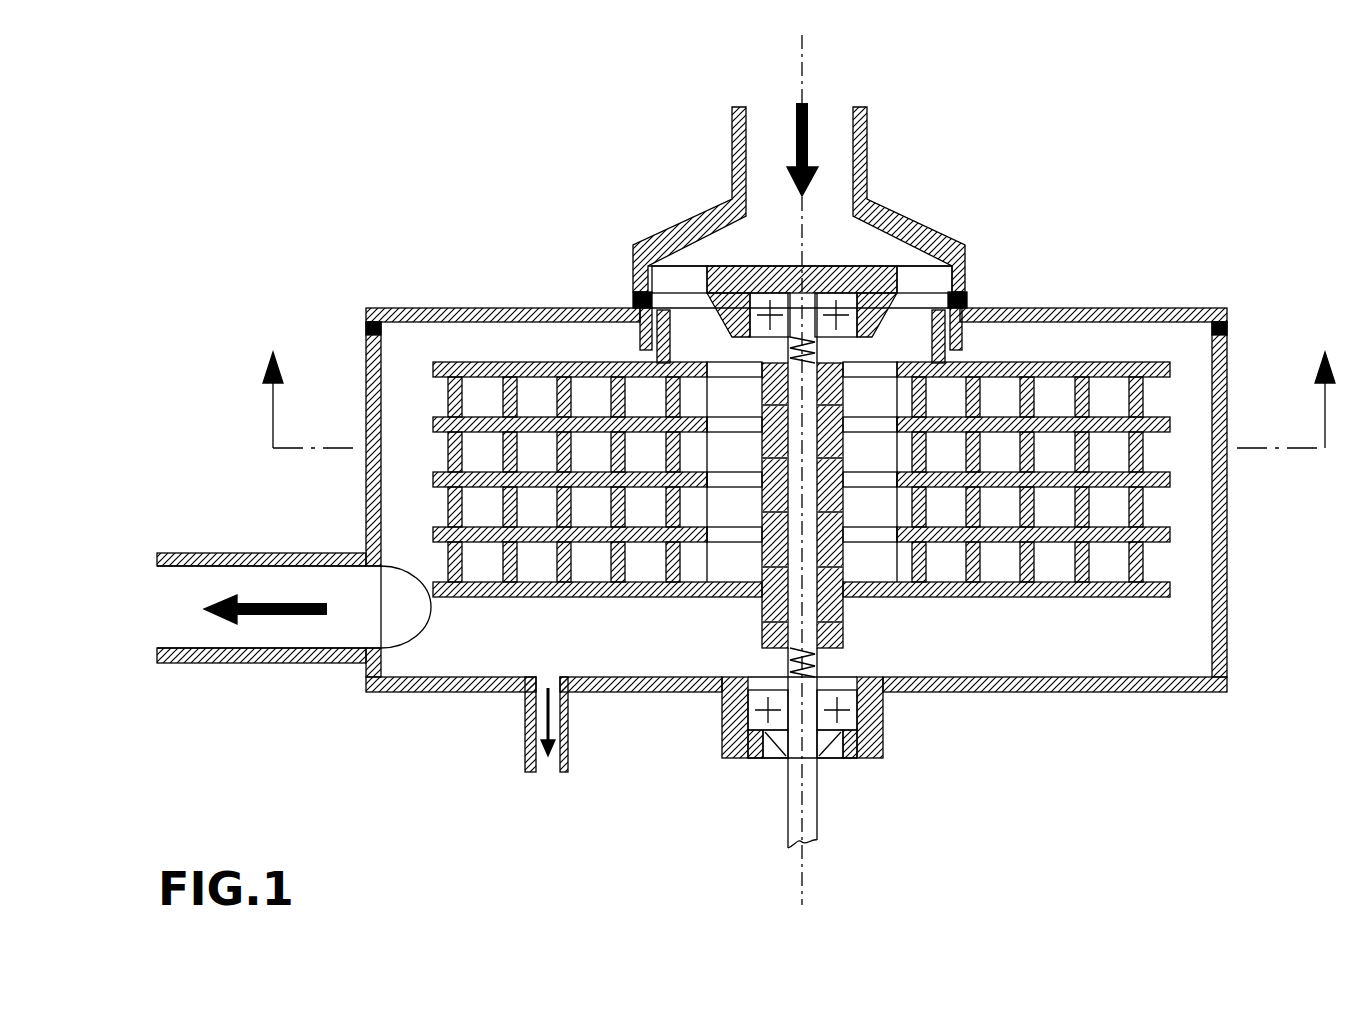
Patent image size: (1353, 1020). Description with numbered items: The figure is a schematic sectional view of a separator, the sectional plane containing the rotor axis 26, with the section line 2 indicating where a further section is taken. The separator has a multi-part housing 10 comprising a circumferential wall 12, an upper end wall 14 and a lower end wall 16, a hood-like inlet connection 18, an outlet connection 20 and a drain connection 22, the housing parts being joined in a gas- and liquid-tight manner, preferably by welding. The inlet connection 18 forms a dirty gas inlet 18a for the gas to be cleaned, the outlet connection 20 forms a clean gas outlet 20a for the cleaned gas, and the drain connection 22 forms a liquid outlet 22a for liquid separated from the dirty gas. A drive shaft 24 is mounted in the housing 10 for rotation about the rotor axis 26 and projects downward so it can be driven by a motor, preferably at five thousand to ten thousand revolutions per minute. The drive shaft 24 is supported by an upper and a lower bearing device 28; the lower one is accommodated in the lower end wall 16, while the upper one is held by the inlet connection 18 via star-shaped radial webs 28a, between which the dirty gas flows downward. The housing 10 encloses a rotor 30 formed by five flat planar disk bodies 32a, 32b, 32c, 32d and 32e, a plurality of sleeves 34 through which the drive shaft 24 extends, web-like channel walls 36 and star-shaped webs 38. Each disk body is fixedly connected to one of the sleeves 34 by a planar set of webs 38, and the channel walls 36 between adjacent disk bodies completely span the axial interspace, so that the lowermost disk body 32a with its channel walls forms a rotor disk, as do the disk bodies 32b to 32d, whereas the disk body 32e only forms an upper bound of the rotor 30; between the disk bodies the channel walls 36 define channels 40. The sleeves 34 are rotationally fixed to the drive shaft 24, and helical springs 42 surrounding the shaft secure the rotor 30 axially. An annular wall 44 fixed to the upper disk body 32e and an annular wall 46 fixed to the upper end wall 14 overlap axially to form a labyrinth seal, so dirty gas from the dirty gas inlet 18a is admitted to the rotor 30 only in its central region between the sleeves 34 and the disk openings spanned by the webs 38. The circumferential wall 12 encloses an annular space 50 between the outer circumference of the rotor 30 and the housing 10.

The housing 10 is at (343, 288).
The circumferential wall 12 is at (841, 487).
The upper end wall 14 is at (433, 310).
The lower end wall 16 is at (1082, 688).
The inlet connection 18 is at (807, 191).
The dirty gas inlet 18a is at (747, 132).
The outlet connection 20 is at (255, 648).
The clean gas outlet 20a is at (190, 568).
The drain connection 22 is at (583, 770).
The liquid outlet 22a is at (540, 762).
The drive shaft 24 is at (808, 793).
The rotor axis 26 is at (803, 862).
The bearing device 28 is at (900, 270).
The radial webs 28a is at (672, 290).
The rotor 30 is at (758, 452).
The disk body 32a is at (1170, 590).
The disk body 32b is at (1170, 535).
The disk body 32c is at (1170, 478).
The disk body 32d is at (1168, 422).
The disk body 32e is at (1125, 362).
The sleeves 34 is at (878, 370).
The channel walls 36 is at (447, 455).
The webs 38 is at (722, 368).
The channels 40 is at (645, 397).
The helical springs 42 is at (847, 300).
The annular wall 44 is at (700, 357).
The annular wall 46 is at (598, 335).
The annular space 50 is at (410, 520).
The section line 2 is at (788, 400).